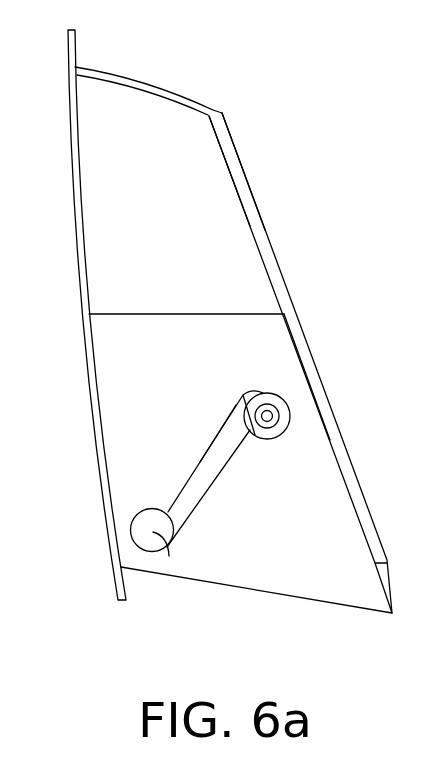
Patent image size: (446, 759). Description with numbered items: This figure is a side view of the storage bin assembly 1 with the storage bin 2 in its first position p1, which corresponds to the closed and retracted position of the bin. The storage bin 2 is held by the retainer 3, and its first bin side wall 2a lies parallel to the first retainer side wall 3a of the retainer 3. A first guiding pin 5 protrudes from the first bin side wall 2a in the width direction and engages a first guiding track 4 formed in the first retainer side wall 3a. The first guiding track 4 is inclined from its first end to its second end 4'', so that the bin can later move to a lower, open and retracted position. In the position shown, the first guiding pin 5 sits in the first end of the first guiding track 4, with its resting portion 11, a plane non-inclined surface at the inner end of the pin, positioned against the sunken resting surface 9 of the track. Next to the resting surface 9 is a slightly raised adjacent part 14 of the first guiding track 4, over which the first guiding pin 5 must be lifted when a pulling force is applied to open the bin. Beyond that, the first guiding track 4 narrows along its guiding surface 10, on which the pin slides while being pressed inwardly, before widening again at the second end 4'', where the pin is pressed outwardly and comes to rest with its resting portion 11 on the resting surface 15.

The storage bin assembly 1 is at (241, 57).
The storage bin 2 is at (252, 131).
The first bin side wall 2a is at (198, 188).
The first position p1 is at (281, 200).
The retainer 3 is at (311, 319).
The first retainer side wall 3a is at (248, 373).
The first guiding pin 5 is at (312, 398).
The resting surface 9 is at (278, 436).
The resting portion 11 is at (266, 438).
The first guiding track 4 is at (232, 522).
The second end of the guiding track 4'' is at (196, 592).
The guiding surface 10 is at (218, 475).
The adjacent part of the first guiding track 14 is at (245, 433).
The resting surface 15 is at (140, 553).